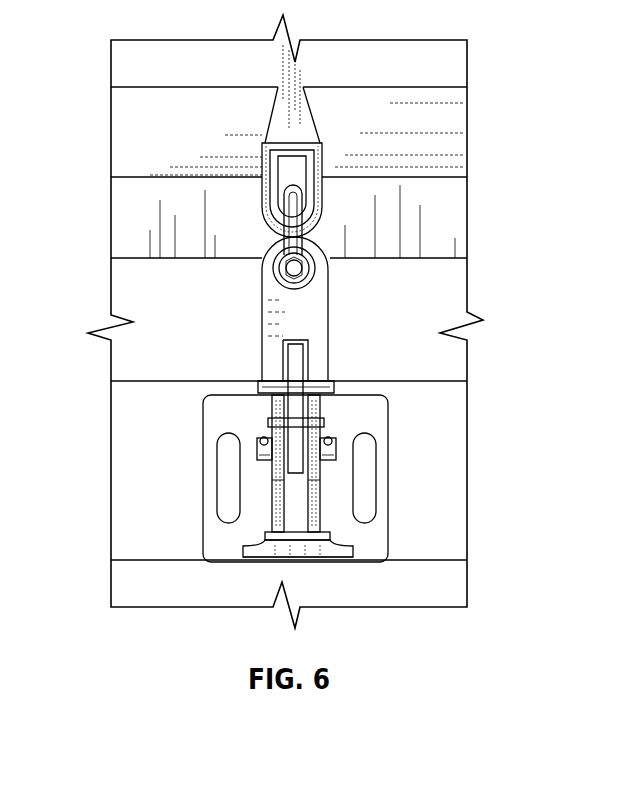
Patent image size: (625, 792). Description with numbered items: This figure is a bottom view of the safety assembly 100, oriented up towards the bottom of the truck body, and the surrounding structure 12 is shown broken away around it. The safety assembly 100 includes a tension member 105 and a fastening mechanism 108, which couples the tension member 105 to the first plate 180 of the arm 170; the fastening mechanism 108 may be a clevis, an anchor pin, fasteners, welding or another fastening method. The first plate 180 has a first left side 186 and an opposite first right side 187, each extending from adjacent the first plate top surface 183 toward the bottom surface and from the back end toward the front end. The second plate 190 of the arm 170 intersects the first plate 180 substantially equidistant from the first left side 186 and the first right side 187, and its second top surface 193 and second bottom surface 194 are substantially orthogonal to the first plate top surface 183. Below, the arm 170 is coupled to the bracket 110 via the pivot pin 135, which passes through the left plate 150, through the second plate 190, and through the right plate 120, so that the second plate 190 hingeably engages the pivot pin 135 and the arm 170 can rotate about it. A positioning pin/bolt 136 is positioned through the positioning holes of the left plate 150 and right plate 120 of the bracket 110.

The safety assembly 100 is at (152, 238).
The tension member 105 is at (303, 124).
The fastening mechanism 108 is at (297, 213).
The arm 170 is at (368, 310).
The first plate 180 is at (270, 297).
The first left side 186 is at (272, 315).
The second plate 190 is at (290, 350).
The second bottom surface 194 is at (272, 386).
The first plate top surface 183 is at (313, 300).
The first right side 187 is at (330, 378).
The second top surface 193 is at (253, 386).
The bracket 110 is at (462, 446).
The structure wall 12 is at (453, 545).
The left plate 150 is at (272, 507).
The positioning pin/bolt 136 is at (325, 423).
The pivot pin 135 is at (338, 452).
The right plate 120 is at (318, 527).